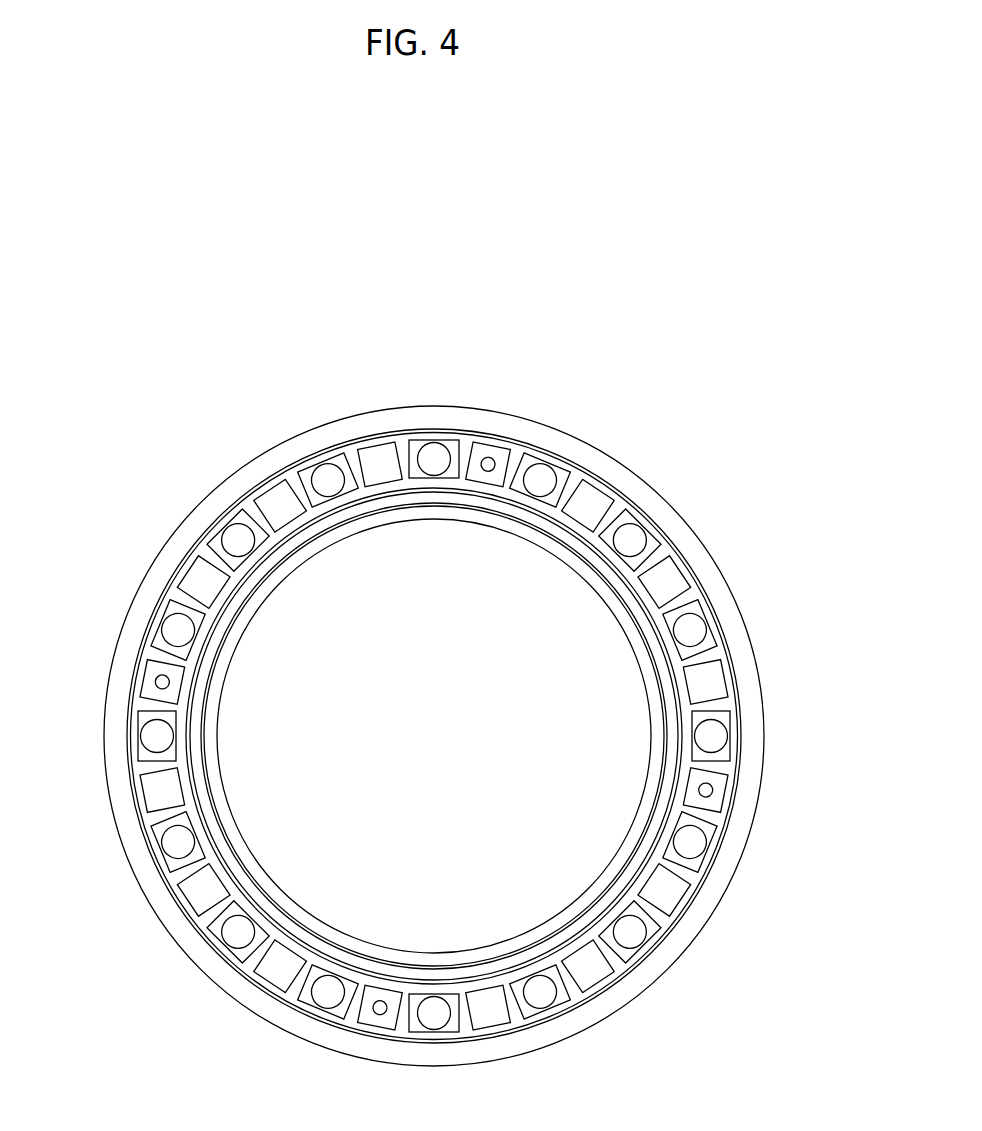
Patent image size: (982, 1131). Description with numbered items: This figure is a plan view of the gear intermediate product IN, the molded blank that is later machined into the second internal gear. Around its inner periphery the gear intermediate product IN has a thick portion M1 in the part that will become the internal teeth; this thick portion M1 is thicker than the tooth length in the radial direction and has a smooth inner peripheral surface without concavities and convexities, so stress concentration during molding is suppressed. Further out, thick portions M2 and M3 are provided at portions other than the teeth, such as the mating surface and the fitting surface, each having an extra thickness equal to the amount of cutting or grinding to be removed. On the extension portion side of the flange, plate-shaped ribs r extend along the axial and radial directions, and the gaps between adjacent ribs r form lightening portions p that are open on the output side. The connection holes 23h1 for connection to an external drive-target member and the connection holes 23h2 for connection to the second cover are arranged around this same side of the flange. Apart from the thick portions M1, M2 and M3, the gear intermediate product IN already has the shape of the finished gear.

The gear intermediate product IN is at (659, 387).
The thick portion M1 is at (298, 910).
The thick portion M2 is at (137, 823).
The thick portion M3 is at (222, 853).
The connection hole 23h1 is at (432, 455).
The connection hole 23h2 is at (158, 678).
The lightening portion p is at (715, 803).
The rib r is at (718, 680).